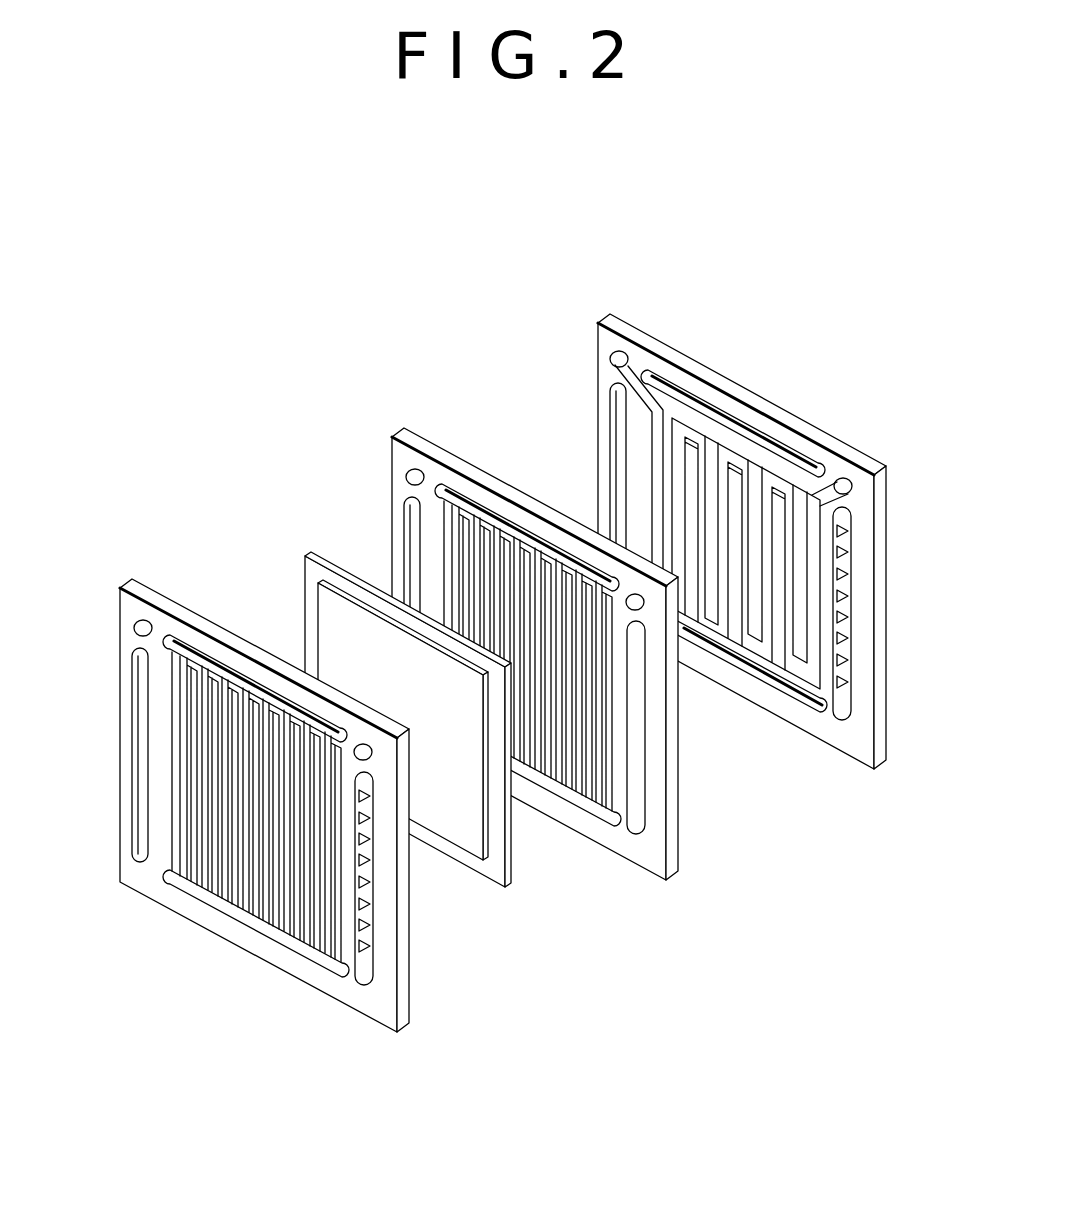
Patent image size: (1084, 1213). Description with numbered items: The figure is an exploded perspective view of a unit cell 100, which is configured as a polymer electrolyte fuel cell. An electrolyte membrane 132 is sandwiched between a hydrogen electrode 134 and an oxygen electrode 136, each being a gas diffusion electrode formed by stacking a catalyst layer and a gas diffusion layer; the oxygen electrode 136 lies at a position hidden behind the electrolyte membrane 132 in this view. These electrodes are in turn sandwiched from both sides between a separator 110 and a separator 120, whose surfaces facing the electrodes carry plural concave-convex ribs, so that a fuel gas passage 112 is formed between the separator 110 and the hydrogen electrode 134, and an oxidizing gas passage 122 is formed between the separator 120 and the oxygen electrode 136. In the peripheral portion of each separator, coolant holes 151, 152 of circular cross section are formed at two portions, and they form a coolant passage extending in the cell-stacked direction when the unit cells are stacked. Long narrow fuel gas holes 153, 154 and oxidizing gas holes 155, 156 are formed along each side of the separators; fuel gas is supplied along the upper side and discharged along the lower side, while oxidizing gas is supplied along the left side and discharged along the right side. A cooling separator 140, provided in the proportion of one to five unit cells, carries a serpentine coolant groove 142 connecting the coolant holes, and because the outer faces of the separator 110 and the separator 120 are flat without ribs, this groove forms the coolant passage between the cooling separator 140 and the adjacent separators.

The unit cell 100 is at (120, 521).
The separator 110 is at (283, 816).
The fuel gas passage 112 is at (374, 935).
The separator 120 is at (582, 676).
The oxidizing gas passage 122 is at (514, 548).
The electrolyte membrane 132 is at (362, 671).
The hydrogen electrode 134 is at (333, 640).
The oxygen electrode 136 is at (355, 632).
The cooling separator 140 is at (781, 574).
The serpentine coolant groove 142 is at (847, 585).
The coolant hole 151 is at (143, 622).
The coolant hole 152 is at (372, 757).
The fuel gas hole 153 is at (735, 426).
The fuel gas hole 154 is at (218, 893).
The oxidizing gas hole 155 is at (140, 728).
The oxidizing gas hole 156 is at (645, 782).